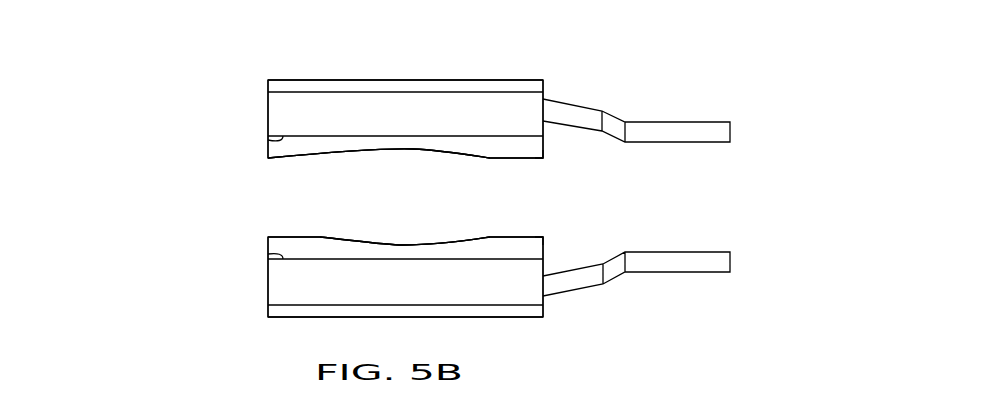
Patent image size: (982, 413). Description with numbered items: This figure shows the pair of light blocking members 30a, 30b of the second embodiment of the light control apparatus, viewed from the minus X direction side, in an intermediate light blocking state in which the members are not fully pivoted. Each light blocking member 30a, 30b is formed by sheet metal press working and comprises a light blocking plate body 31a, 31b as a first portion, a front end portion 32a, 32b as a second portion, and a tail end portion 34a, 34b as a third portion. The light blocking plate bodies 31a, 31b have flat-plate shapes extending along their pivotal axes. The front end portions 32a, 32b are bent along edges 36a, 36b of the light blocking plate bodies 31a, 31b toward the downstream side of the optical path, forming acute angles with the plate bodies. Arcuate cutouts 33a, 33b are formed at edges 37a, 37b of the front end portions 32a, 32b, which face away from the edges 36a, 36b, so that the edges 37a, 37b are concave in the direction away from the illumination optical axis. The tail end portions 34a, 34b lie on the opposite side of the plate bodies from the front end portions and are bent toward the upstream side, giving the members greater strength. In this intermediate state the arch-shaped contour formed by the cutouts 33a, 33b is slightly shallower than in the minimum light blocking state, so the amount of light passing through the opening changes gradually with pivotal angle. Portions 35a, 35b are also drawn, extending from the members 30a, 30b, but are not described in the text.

The light blocking member 30a is at (128, 105).
The light blocking member 30b is at (126, 294).
The light blocking plate body 31a is at (268, 113).
The light blocking plate body 31b is at (268, 280).
The front end portion 32a is at (268, 152).
The front end portion 32b is at (268, 243).
The arcuate cutout 33a is at (413, 150).
The arcuate cutout 33b is at (405, 243).
The tail end portion 34a is at (268, 85).
The tail end portion 34b is at (268, 310).
The first lead terminal 35a is at (614, 113).
The second lead terminal 35b is at (615, 278).
The edge 36a is at (268, 139).
The edge 36b is at (268, 256).
The edge 37a is at (528, 159).
The edge 37b is at (528, 237).